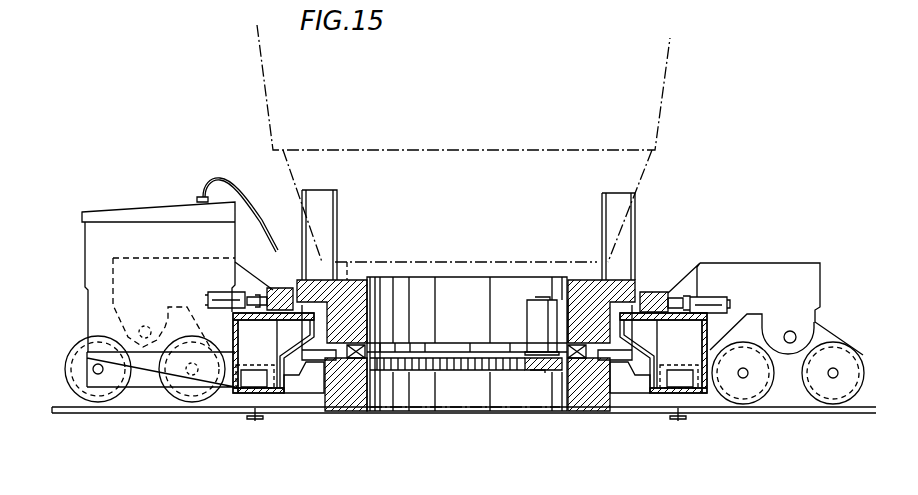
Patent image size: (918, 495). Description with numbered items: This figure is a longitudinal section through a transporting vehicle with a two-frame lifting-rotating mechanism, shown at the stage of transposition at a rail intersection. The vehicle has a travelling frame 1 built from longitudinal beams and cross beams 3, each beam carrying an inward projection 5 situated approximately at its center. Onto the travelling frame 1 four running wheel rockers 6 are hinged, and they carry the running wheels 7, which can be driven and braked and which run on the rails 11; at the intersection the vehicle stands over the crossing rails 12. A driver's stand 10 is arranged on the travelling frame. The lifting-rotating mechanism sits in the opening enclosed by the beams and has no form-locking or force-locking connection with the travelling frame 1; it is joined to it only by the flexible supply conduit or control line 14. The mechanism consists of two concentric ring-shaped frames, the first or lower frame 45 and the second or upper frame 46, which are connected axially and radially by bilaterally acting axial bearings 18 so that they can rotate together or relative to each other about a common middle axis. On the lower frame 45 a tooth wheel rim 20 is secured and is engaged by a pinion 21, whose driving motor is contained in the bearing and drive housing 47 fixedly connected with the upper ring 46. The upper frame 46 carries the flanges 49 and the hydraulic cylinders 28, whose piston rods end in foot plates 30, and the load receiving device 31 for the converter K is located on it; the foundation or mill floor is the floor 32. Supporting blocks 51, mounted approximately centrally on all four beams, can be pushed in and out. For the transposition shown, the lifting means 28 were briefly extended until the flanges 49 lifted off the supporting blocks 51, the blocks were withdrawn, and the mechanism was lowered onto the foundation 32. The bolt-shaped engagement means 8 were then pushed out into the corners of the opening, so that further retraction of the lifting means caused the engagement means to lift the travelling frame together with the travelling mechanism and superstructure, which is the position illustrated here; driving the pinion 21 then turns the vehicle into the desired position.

The travelling frame 1 is at (762, 260).
The cross beam 3 is at (253, 330).
The inward projection 5 is at (285, 288).
The running wheel rocker 6 is at (143, 378).
The running wheel 7 is at (101, 392).
The bolt-shaped engagement means 8 is at (271, 395).
The driver's stand 10 is at (131, 232).
The rail 11 is at (58, 412).
The rails 12 is at (255, 421).
The flexible supply conduit or control line 14 is at (203, 183).
The axial bearing 18 is at (358, 358).
The tooth wheel rim 20 is at (423, 363).
The pinion 21 is at (533, 372).
The hydraulic cylinder 28 is at (317, 203).
The foot plate 30 is at (315, 377).
The load receiving device 31 is at (348, 267).
The foundation 32 is at (442, 412).
The first or lower frame 45 is at (583, 390).
The second or upper frame 46 is at (583, 290).
The bearing and drive housing 47 is at (535, 313).
The flange 49 is at (318, 276).
The supporting block 51 is at (273, 288).
The converter K is at (480, 134).